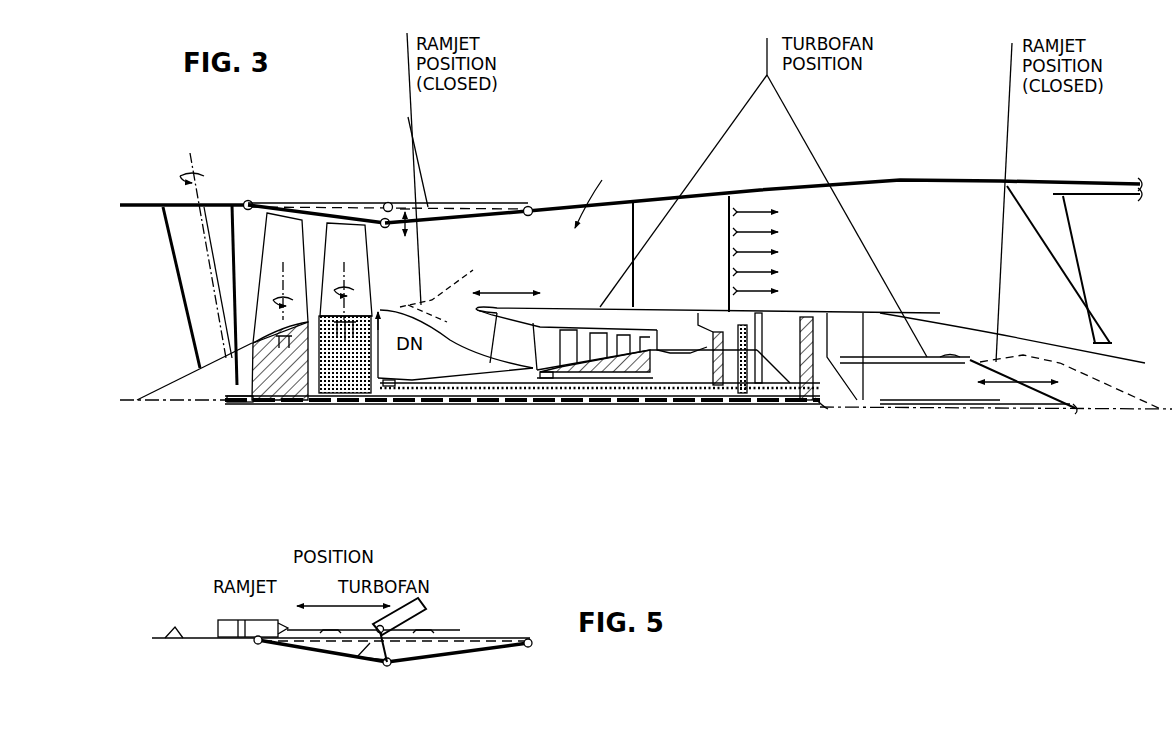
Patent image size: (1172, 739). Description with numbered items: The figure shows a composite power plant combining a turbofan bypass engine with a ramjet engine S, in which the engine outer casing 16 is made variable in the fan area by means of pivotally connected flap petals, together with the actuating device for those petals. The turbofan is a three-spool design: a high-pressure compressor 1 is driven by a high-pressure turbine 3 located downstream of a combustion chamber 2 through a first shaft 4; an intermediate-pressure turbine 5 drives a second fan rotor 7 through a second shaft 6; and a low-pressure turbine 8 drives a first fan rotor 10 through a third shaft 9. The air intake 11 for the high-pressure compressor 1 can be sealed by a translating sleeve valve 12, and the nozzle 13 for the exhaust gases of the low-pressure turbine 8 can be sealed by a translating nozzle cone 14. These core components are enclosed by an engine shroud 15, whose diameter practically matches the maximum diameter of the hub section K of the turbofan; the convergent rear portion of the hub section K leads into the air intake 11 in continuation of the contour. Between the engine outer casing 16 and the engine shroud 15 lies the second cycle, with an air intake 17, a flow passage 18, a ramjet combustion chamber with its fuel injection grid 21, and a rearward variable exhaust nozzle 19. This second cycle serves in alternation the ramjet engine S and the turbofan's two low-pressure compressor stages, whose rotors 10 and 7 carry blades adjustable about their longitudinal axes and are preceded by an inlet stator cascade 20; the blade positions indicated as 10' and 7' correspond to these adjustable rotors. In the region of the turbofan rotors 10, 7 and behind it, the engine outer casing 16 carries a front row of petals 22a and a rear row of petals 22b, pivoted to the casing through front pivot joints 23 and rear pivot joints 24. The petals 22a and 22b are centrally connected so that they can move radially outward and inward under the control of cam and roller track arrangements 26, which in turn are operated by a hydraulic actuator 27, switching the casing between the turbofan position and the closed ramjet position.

In FIG. 3, the high-pressure compressor 1 is at (628, 373).
In FIG. 3, the combustion chamber 2 is at (670, 327).
In FIG. 3, the high-pressure turbine 3 is at (723, 386).
In FIG. 3, the first shaft 4 is at (668, 379).
In FIG. 3, the intermediate-pressure turbine 5 is at (748, 386).
In FIG. 3, the second shaft 6 is at (562, 396).
In FIG. 3, the second fan rotor 7 is at (344, 335).
In FIG. 3, the ramp pivot 7' is at (393, 194).
In FIG. 3, the low-pressure turbine 8 is at (813, 404).
In FIG. 3, the third shaft 9 is at (520, 404).
In FIG. 3, the first fan rotor 10 is at (280, 384).
In FIG. 3, the movable ramp panel 10' is at (280, 248).
In FIG. 3, the air intake 11 is at (473, 340).
In FIG. 3, the translating sleeve valve 12 is at (542, 305).
In FIG. 3, the nozzle 13 is at (1025, 372).
In FIG. 3, the translating nozzle cone 14 is at (952, 357).
In FIG. 3, the engine shroud 15 is at (580, 313).
In FIG. 3, the engine outer casing 16 is at (628, 203).
In FIG. 3, the air intake 17 is at (157, 316).
In FIG. 3, the flow passage 18 is at (835, 200).
In FIG. 3, the variable exhaust nozzle 19 is at (1140, 288).
In FIG. 3, the inlet stator cascade 20 is at (180, 247).
In FIG. 3, the fuel injection grid 21 is at (810, 185).
In FIG. 3, the front row of petals 22a is at (351, 202).
In FIG. 5, the front row of petals 22a is at (323, 655).
In FIG. 3, the rear row of petals 22b is at (458, 190).
In FIG. 5, the rear row of petals 22b is at (480, 653).
In FIG. 3, the front pivot joints 23 is at (246, 200).
In FIG. 3, the rear pivot joints 24 is at (542, 203).
In FIG. 5, the cam and roller track arrangements 26 is at (424, 611).
In FIG. 5, the hydraulic actuator 27 is at (220, 622).
In FIG. 3, the ramjet engine S is at (593, 192).
In FIG. 3, the hub section K is at (187, 383).